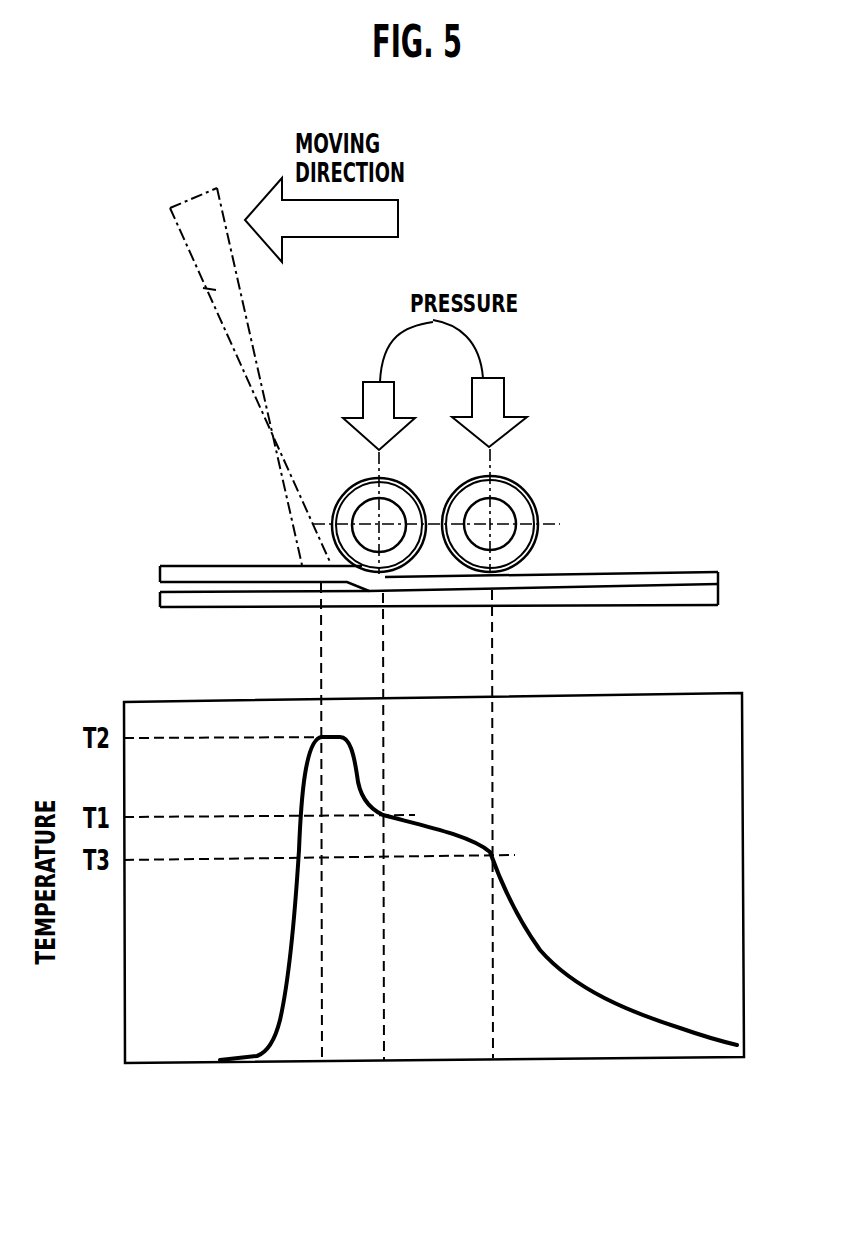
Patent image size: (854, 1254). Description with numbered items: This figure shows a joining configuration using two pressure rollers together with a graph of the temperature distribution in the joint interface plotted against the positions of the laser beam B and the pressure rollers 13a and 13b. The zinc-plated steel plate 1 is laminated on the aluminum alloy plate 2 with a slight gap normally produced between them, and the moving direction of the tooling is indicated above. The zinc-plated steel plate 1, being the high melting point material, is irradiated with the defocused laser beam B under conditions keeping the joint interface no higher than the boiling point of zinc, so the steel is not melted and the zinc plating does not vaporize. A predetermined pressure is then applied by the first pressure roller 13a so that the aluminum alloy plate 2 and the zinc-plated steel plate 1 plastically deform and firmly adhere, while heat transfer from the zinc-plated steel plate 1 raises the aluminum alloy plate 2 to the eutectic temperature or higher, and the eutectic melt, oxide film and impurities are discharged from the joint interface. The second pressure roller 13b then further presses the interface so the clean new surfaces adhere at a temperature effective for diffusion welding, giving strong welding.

The zinc-plated steel plate 1 is at (178, 566).
The aluminum alloy plate 2 is at (707, 594).
The first pressure roller 13a is at (408, 498).
The second pressure roller 13b is at (516, 496).
The laser beam B is at (203, 288).